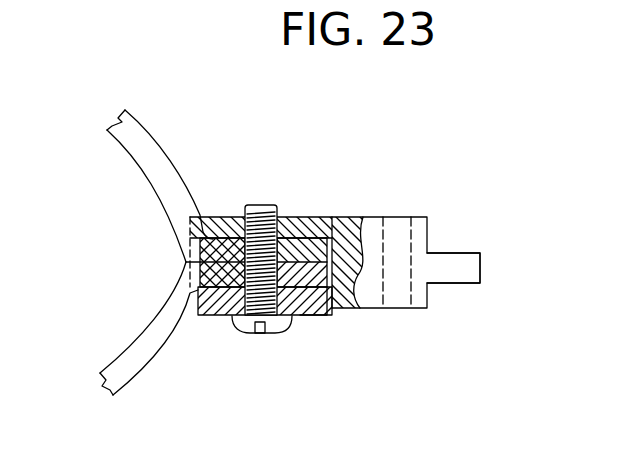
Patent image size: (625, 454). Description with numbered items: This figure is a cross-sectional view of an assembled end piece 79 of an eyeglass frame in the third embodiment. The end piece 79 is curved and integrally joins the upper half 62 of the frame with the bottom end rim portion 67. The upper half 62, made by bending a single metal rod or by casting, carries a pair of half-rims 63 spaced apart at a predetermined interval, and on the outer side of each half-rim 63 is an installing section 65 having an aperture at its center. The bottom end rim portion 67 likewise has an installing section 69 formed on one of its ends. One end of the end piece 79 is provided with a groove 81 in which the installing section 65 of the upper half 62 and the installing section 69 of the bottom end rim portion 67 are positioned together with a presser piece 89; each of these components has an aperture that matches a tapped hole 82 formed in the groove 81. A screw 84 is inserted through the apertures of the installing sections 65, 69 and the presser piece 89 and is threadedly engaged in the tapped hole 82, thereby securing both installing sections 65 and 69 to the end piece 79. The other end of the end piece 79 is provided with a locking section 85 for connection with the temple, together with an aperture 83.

The upper half 62 is at (140, 157).
The half-rim 63 is at (133, 157).
The installing section 65 is at (199, 248).
The bottom end rim portion 67 is at (157, 365).
The installing section 69 is at (224, 292).
The end piece 79 is at (248, 240).
The groove 81 is at (316, 241).
The tapped hole 82 is at (247, 205).
The aperture 83 is at (410, 236).
The screw 84 is at (277, 334).
The locking section 85 is at (460, 253).
The presser piece 89 is at (312, 320).